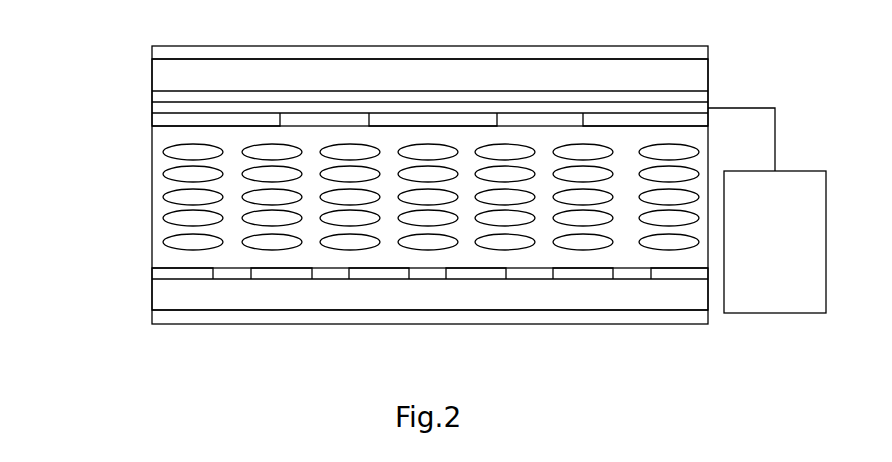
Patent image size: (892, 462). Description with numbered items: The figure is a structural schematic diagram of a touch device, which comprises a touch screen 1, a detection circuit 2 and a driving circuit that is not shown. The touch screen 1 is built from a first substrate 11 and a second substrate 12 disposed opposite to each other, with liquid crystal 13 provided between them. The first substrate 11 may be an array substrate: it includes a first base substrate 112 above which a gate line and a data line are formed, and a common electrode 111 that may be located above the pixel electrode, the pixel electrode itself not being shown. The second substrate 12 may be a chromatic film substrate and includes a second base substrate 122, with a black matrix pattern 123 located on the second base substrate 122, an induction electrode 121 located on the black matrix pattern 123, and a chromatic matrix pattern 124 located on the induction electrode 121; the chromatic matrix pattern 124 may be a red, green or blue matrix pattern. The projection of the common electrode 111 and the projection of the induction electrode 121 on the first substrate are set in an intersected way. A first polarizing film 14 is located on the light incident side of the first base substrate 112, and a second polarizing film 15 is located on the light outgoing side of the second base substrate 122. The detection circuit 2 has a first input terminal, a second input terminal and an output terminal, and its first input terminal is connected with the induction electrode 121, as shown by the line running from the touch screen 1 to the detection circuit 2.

The touch screen 1 is at (50, 37).
The first substrate 11 is at (74, 262).
The common electrode 111 is at (152, 273).
The first base substrate 112 is at (152, 293).
The second substrate 12 is at (72, 60).
The induction electrode 121 is at (152, 108).
The second base substrate 122 is at (152, 78).
The black matrix pattern 123 is at (152, 97).
The chromatic matrix pattern 124 is at (152, 121).
The liquid crystal 13 is at (166, 170).
The first polarizing film 14 is at (152, 318).
The second polarizing film 15 is at (152, 52).
The detection circuit 2 is at (785, 170).